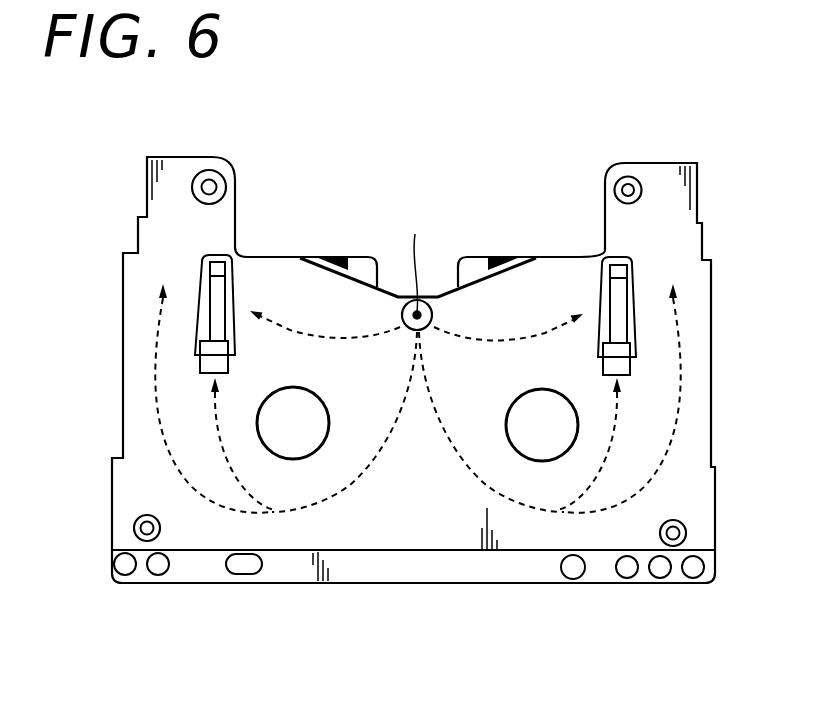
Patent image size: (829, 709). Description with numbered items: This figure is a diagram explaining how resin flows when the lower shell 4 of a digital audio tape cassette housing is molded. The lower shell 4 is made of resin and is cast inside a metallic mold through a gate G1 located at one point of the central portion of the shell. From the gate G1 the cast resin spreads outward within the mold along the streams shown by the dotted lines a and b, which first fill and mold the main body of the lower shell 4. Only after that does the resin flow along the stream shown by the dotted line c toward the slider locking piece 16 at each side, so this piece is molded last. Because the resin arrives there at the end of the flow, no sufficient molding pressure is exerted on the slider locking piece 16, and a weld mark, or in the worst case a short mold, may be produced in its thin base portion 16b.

The lower shell 4 is at (413, 535).
The slider locking piece 16 is at (226, 317).
The thin base portion 16b is at (212, 350).
The gate G1 is at (412, 261).
The dotted line (resin stream) a is at (416, 408).
The dotted line (resin stream) b is at (417, 398).
The dotted line (resin stream) c is at (416, 444).